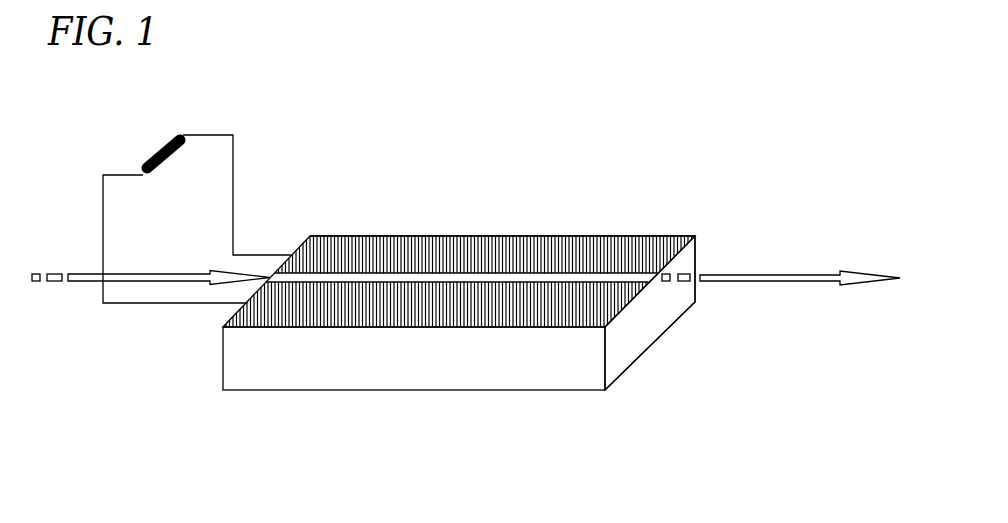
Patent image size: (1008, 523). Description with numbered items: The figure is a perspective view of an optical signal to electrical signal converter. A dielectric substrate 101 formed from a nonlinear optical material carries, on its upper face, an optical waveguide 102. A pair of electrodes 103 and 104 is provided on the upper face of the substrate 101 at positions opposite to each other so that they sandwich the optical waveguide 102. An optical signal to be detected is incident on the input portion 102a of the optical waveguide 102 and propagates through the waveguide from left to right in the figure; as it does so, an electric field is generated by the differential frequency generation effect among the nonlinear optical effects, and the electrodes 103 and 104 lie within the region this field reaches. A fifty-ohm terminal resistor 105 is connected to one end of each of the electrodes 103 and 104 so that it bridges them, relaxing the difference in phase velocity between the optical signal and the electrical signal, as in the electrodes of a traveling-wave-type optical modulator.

The dielectric substrate 101 is at (410, 390).
The optical waveguide 102 is at (440, 278).
The input portion 102a is at (270, 275).
The electrode 103 is at (632, 300).
The electrode 104 is at (505, 236).
The terminal resistor 105 is at (103, 182).